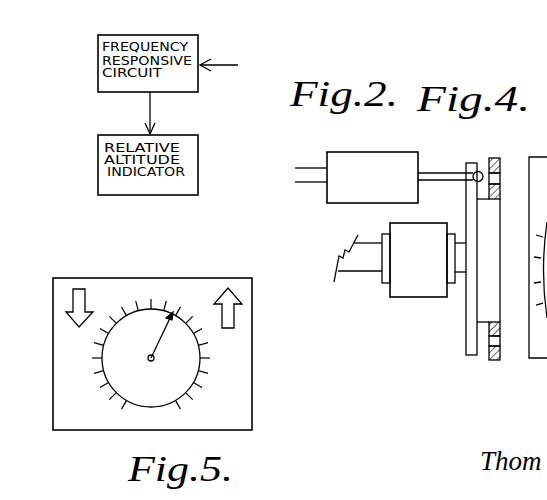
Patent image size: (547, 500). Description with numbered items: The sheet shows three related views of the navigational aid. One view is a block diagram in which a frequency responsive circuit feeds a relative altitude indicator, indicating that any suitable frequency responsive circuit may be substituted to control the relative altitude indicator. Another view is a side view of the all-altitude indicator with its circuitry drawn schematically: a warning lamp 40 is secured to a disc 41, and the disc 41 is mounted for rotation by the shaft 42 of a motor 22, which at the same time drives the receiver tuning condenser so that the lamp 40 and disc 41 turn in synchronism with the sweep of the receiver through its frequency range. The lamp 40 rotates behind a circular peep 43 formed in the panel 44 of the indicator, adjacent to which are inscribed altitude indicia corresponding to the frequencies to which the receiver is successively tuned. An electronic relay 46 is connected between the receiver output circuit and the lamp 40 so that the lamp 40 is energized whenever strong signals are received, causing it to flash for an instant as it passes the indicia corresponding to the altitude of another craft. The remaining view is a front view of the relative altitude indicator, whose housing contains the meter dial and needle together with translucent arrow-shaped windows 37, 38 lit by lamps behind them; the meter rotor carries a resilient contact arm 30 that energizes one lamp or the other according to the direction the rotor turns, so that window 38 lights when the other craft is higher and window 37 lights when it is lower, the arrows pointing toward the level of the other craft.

In FIG. 4, the motor 22 is at (394, 260).
In FIG. 5, the contact arm 30 is at (252, 385).
In FIG. 5, the arrow-shaped window 37 is at (70, 298).
In FIG. 5, the arrow-shaped window 38 is at (235, 313).
In FIG. 4, the warning lamp 40 is at (475, 181).
In FIG. 4, the disc 41 is at (472, 163).
In FIG. 4, the shaft 42 is at (461, 276).
In FIG. 4, the circular peep 43 is at (500, 179).
In FIG. 4, the panel 44 is at (494, 159).
In FIG. 4, the electronic relay 46 is at (356, 177).